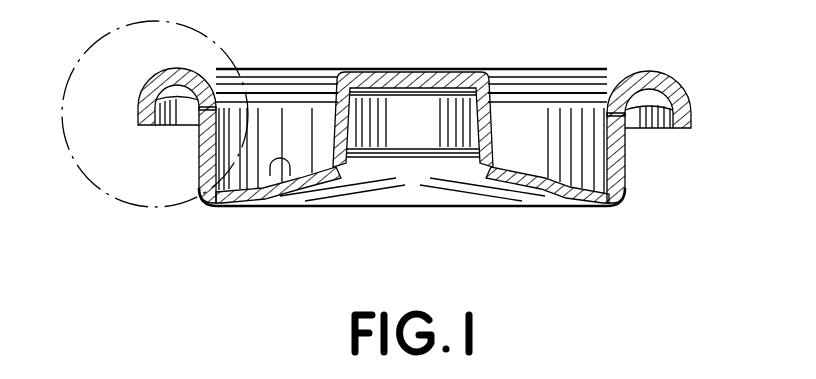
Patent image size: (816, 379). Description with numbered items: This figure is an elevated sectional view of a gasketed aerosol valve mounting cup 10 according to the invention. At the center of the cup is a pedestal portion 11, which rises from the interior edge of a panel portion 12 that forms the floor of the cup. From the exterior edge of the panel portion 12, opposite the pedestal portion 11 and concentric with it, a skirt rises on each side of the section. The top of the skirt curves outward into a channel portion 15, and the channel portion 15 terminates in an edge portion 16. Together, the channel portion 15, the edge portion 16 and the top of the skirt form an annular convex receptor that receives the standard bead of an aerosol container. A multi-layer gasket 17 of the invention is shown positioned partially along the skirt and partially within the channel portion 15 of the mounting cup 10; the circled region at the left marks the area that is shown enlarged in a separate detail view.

The aerosol valve mounting cup 10 is at (376, 137).
The pedestal portion 11 is at (456, 72).
The panel portion 12 is at (267, 210).
The channel portion 15 is at (638, 72).
The edge portion 16 is at (141, 110).
The multi-layer gasket 17 is at (199, 142).